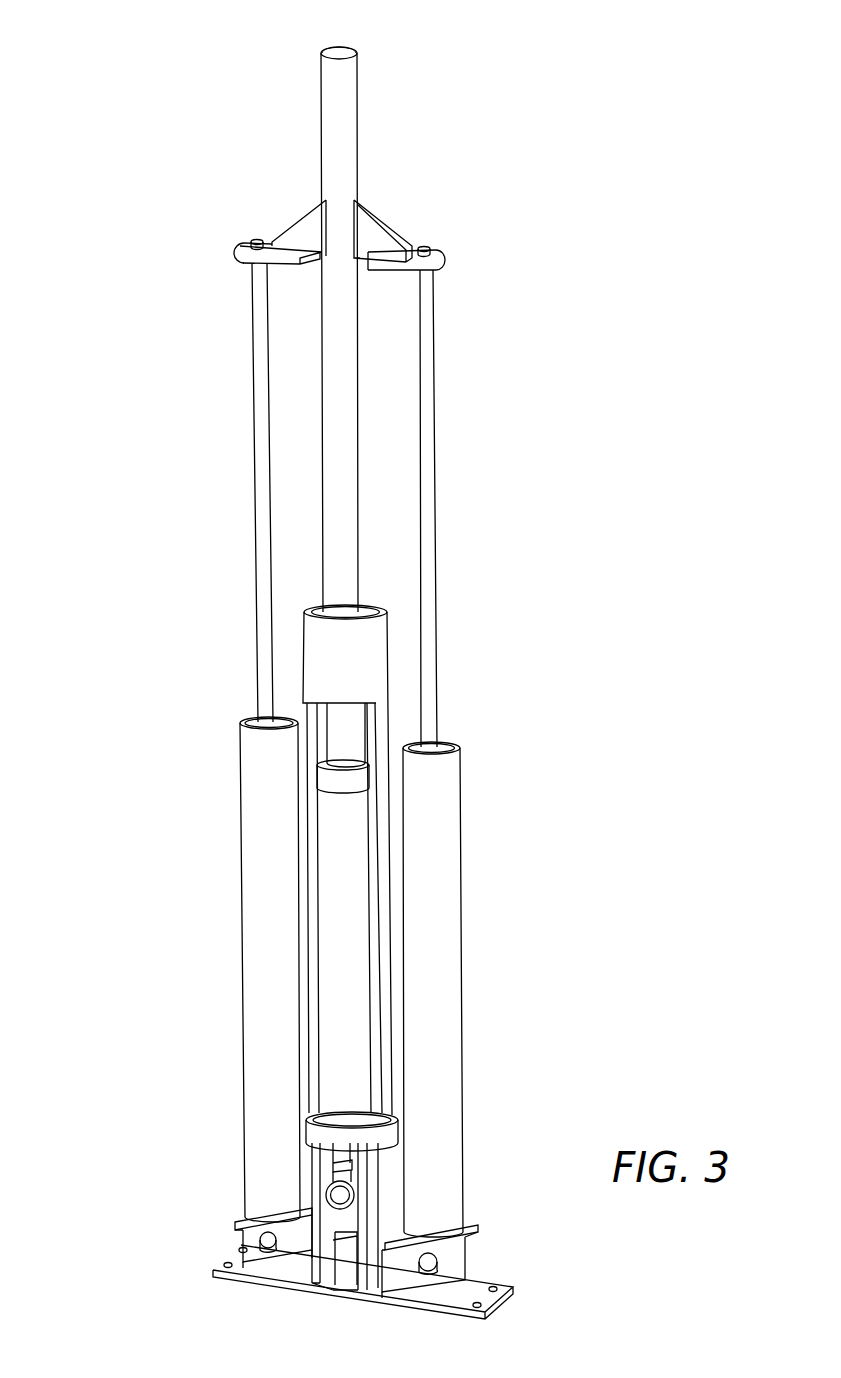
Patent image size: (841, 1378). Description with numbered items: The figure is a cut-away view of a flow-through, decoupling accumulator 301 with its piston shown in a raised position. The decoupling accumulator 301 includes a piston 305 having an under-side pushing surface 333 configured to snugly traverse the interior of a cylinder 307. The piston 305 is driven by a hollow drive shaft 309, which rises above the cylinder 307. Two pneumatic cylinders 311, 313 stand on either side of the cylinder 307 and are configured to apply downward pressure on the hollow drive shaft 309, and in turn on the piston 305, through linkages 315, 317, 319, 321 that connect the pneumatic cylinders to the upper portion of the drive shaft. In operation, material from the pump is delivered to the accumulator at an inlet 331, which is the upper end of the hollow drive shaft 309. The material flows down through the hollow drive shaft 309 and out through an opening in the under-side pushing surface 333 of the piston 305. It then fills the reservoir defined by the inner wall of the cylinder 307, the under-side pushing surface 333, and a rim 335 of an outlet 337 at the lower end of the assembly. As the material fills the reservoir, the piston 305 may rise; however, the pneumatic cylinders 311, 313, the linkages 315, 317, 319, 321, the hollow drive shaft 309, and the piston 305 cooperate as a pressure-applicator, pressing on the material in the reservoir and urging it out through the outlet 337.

The decoupling accumulator 301 is at (299, 668).
The piston 305 is at (327, 780).
The cylinder 307 is at (320, 675).
The hollow drive shaft 309 is at (327, 105).
The pneumatic cylinder 311 is at (263, 960).
The pneumatic cylinder 313 is at (443, 858).
The linkage 315 is at (256, 392).
The linkage 317 is at (308, 230).
The linkage 319 is at (368, 229).
The linkage 321 is at (430, 344).
The inlet 331 is at (337, 48).
The under-side pushing surface 333 is at (348, 795).
The rim 335 is at (345, 1118).
The outlet 337 is at (338, 1211).